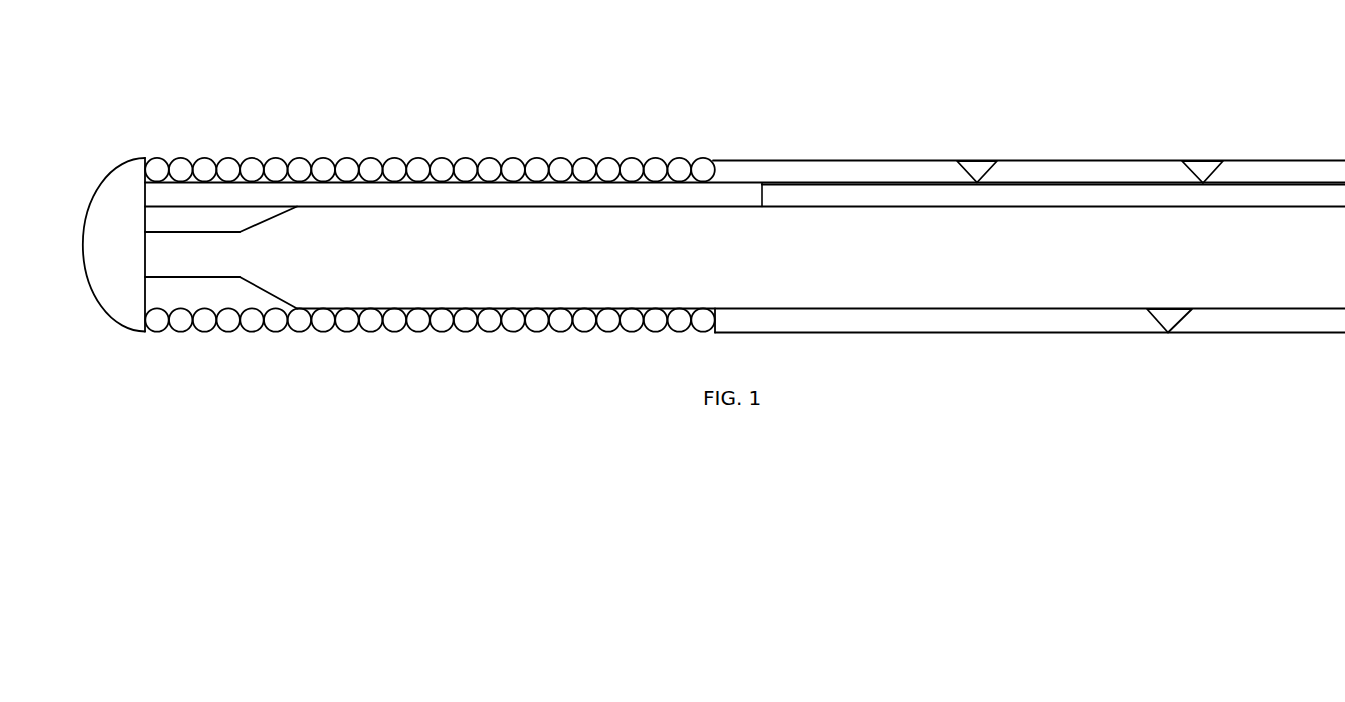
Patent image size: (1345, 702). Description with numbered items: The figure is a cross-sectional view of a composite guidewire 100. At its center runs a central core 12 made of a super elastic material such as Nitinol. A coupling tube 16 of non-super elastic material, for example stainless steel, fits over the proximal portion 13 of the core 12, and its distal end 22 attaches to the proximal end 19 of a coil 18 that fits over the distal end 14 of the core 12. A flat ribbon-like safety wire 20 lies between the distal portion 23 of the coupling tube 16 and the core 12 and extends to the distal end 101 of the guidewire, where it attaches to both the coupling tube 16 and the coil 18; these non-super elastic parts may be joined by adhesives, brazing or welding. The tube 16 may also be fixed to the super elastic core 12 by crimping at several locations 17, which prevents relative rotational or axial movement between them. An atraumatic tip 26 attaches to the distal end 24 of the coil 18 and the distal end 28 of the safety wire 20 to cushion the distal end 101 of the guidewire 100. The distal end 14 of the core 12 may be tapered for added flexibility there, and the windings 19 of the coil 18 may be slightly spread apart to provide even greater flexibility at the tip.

The composite guidewire 100 is at (1238, 94).
The distal end of the guidewire 101 is at (188, 345).
The central core 12 is at (1314, 272).
The proximal portion of the core 13 is at (1063, 313).
The distal end of the core 14 is at (240, 282).
The coupling tube 16 is at (847, 168).
The crimping locations 17 is at (968, 160).
The coil 18 is at (510, 158).
The proximal end of the coil 19 is at (707, 160).
The safety wire 20 is at (636, 192).
The distal end of the coupling tube 22 is at (733, 173).
The distal portion of the coupling tube 23 is at (728, 147).
The distal end of the coil 24 is at (148, 160).
The atraumatic tip 26 is at (104, 193).
The distal end of the safety wire 28 is at (155, 198).